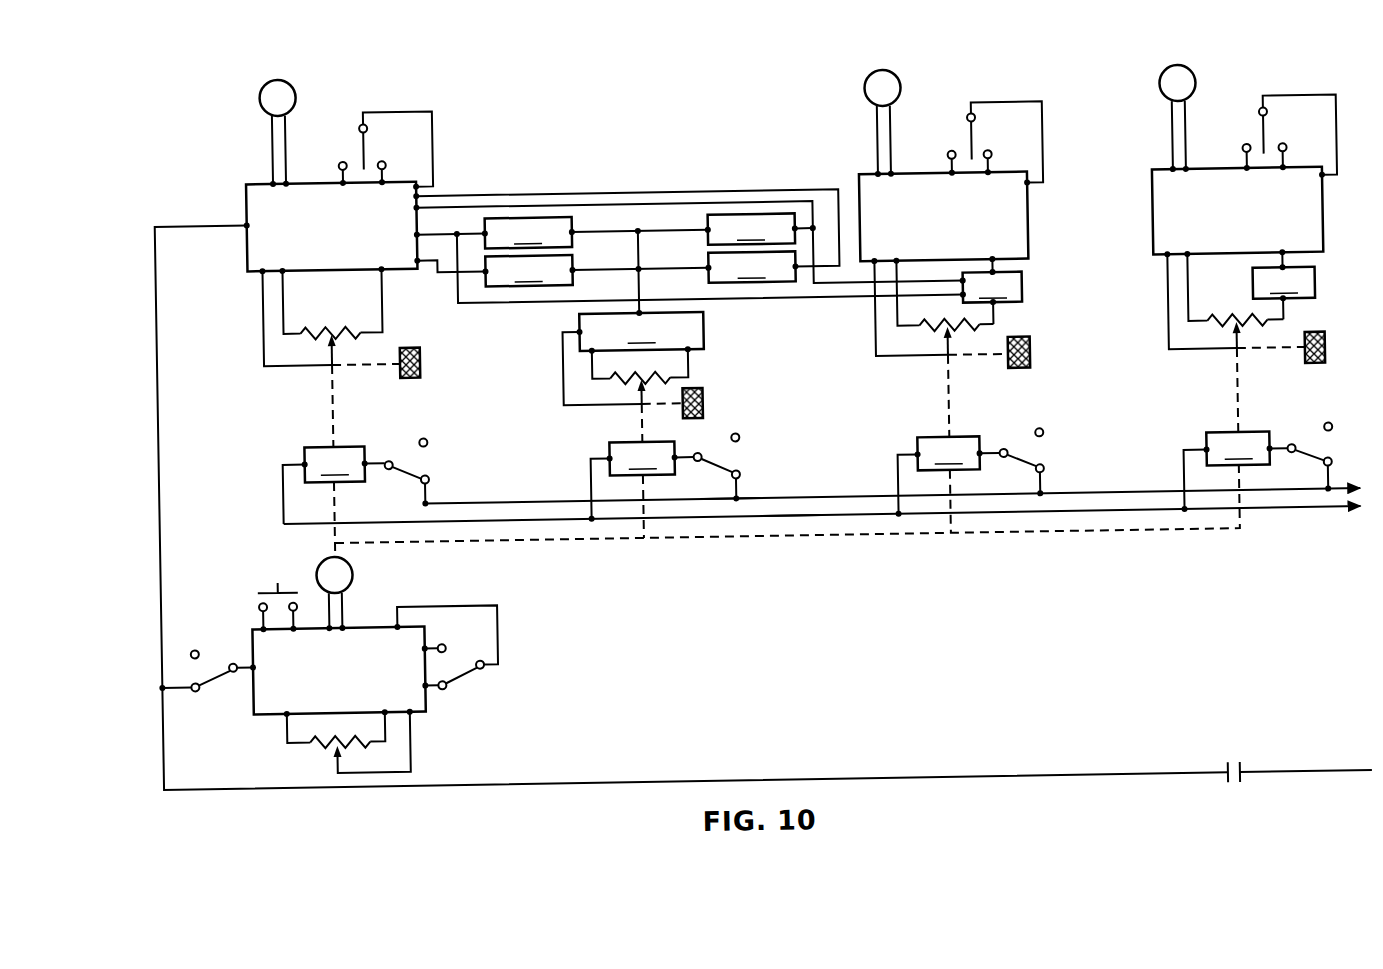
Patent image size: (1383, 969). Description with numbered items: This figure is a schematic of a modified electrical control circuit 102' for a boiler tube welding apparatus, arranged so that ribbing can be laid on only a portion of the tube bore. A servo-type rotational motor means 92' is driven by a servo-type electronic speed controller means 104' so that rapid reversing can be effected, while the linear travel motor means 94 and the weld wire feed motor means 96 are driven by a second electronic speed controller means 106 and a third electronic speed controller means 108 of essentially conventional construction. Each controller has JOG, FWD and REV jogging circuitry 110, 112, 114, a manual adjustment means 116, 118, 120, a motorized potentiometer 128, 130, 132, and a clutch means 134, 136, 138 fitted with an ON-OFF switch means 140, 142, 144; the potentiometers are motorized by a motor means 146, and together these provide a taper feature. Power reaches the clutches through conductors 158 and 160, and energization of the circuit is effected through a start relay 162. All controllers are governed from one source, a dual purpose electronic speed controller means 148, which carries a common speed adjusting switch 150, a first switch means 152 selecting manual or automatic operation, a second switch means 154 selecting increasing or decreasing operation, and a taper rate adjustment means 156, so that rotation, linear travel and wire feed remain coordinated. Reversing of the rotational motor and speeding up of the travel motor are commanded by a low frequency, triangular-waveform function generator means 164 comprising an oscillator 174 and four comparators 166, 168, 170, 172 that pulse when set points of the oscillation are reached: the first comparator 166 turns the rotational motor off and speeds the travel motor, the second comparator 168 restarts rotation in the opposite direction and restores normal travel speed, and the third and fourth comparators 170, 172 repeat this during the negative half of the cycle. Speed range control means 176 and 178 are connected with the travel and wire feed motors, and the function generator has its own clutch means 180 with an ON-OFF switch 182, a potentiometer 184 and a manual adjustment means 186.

The electrical control circuit 102' is at (761, 483).
The rotational motor means 92' is at (244, 133).
The linear travel motor means 94 is at (871, 92).
The weld wire feed motor means 96 is at (1166, 92).
The electronic speed controller means 104' is at (297, 208).
The second electronic speed controller means 106 is at (864, 181).
The third electronic speed controller means 108 is at (1157, 181).
The jogging switch circuitry 110 is at (402, 102).
The jogging switch circuitry 112 is at (1010, 103).
The jogging switch circuitry 114 is at (1300, 101).
The manual adjustment means 116 is at (422, 358).
The manual adjustment means 118 is at (1032, 356).
The manual adjustment means 120 is at (1310, 373).
The potentiometer 128 is at (350, 322).
The potentiometer 130 is at (921, 327).
The potentiometer 132 is at (1246, 326).
The clutch means 134 is at (333, 485).
The clutch means 136 is at (948, 475).
The clutch means 138 is at (1235, 470).
The ON-OFF switch means 140 is at (410, 462).
The ON-OFF switch means 142 is at (1026, 462).
The ON-OFF switch means 144 is at (1305, 450).
The motor means 146 is at (351, 569).
The dual purpose electronic speed controller means 148 is at (406, 712).
The common speed adjusting switch 150 is at (252, 595).
The first switch means 152 is at (207, 688).
The second switch means 154 is at (486, 668).
The taper rate adjustment means 156 is at (308, 744).
The conductor 158 is at (856, 497).
The conductor 160 is at (856, 520).
The start relay 162 is at (1237, 775).
The low frequency function generator means 164 is at (640, 220).
The first comparator 166 is at (528, 233).
The second comparator 168 is at (528, 271).
The third comparator 170 is at (751, 229).
The fourth comparator 172 is at (751, 267).
The oscillator 174 is at (633, 358).
The speed range control means 176 is at (990, 292).
The speed range control means 178 is at (1283, 286).
The clutch means 180 is at (642, 480).
The ON-OFF switch 182 is at (720, 462).
The potentiometer 184 is at (664, 374).
The manual adjustment means 186 is at (704, 398).